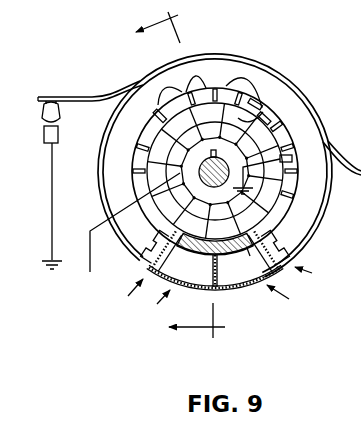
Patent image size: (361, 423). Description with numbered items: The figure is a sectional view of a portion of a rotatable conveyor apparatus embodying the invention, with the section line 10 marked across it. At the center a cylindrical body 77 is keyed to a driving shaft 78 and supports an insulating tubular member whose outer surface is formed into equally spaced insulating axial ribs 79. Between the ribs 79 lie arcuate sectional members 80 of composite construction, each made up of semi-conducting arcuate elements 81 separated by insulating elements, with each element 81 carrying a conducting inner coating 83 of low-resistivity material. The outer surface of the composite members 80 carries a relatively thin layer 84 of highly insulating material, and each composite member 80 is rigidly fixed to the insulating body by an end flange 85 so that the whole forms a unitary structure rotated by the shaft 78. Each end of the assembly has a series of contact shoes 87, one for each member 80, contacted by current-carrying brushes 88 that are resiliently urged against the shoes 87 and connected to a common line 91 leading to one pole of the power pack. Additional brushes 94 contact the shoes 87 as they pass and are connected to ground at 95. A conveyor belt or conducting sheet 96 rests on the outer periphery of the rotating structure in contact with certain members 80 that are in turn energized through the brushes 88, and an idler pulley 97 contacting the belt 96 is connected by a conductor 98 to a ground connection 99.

The section line 10 is at (192, 173).
The cylindrical body 77 is at (137, 164).
The driving shaft 78 is at (206, 182).
The insulating axial ribs 79 is at (151, 243).
The arcuate sectional members 80 is at (219, 291).
The arcuate elements 81 is at (196, 281).
The inner coating 83 is at (207, 243).
The thin layer 84 is at (314, 227).
The end flange 85 is at (263, 77).
The contact shoes 87 is at (231, 84).
The current-carrying brushes 88 is at (163, 110).
The common line 91 is at (88, 246).
The additional brushes 94 is at (285, 155).
The ground 95 is at (242, 186).
The conveyor belt 96 is at (96, 97).
The idler pulley 97 is at (60, 109).
The conductor 98 is at (55, 200).
The ground connection 99 is at (58, 271).